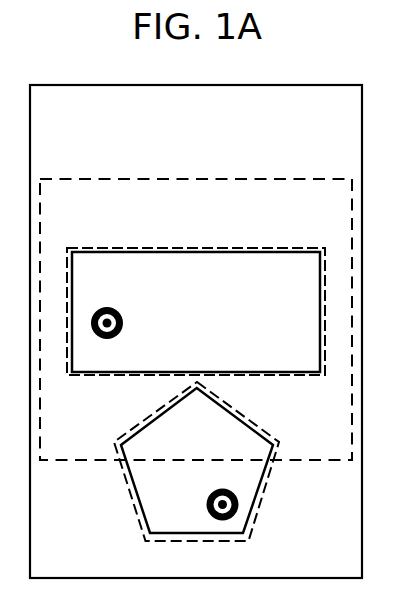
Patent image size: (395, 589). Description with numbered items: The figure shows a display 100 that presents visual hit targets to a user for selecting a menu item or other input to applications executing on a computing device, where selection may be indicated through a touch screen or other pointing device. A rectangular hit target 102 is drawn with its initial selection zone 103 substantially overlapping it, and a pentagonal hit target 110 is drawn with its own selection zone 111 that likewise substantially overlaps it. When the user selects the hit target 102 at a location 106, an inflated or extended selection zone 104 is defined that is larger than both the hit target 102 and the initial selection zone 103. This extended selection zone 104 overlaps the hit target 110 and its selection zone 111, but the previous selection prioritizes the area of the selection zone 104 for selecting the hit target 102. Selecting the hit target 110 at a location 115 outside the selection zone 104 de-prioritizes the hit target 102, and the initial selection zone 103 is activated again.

The display 100 is at (196, 331).
The hit target 102 is at (196, 312).
The selection zone 103 is at (111, 376).
The selection zone 104 is at (297, 178).
The location 106 is at (108, 307).
The hit target 110 is at (129, 481).
The selection zone 111 is at (267, 488).
The location 115 is at (207, 504).